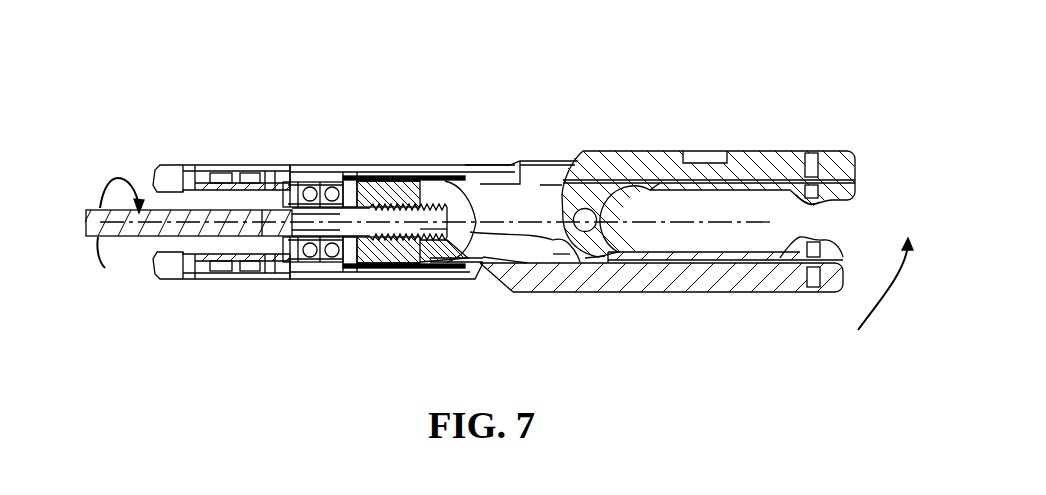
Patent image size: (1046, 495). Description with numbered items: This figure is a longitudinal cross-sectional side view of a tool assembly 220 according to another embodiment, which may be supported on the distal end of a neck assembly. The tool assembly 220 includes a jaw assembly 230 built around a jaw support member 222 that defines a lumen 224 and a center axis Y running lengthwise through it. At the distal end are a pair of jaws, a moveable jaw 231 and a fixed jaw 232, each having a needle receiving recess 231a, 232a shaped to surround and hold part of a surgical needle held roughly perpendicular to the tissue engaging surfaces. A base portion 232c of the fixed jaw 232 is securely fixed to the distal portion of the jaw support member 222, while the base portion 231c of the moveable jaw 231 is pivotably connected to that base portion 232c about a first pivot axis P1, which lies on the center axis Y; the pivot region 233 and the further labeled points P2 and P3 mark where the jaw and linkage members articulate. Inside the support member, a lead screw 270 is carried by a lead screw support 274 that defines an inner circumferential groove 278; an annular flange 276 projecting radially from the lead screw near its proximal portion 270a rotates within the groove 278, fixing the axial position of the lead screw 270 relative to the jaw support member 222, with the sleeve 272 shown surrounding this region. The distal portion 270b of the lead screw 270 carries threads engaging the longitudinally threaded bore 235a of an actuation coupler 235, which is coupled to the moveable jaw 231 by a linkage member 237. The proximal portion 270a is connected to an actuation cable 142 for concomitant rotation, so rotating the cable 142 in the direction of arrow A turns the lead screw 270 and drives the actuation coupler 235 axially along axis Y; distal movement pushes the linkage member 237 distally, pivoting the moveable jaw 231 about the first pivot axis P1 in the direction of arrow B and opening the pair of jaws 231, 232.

The actuation cable 142 is at (132, 237).
The tool assembly 220 is at (594, 72).
The jaw support member 222 is at (400, 165).
The lumen 224 is at (174, 203).
The jaw assembly 230 is at (859, 182).
The moveable jaw 231 is at (753, 155).
The needle receiving recess 231a is at (822, 199).
The base portion 231c is at (593, 247).
The fixed jaw 232 is at (714, 282).
The needle receiving recess 232a is at (823, 238).
The base portion 232c is at (492, 263).
The pivot boss 233 is at (584, 218).
The actuation coupler 235 is at (370, 248).
The longitudinally threaded bore 235a is at (385, 181).
The linkage member 237 is at (513, 253).
The lead screw 270 is at (347, 250).
The proximal portion 270a is at (300, 228).
The distal portion 270b is at (455, 195).
The sleeve 272 is at (365, 176).
The lead screw support 274 is at (312, 260).
The annular flange 276 is at (345, 245).
The inner circumferential groove 278 is at (313, 188).
The first pivot axis P1 is at (590, 197).
The second pivot point P2 is at (560, 253).
The third pivot point P3 is at (432, 240).
The arrow A is at (120, 209).
The arrow B is at (890, 284).
The center axis Y- Y is at (432, 221).